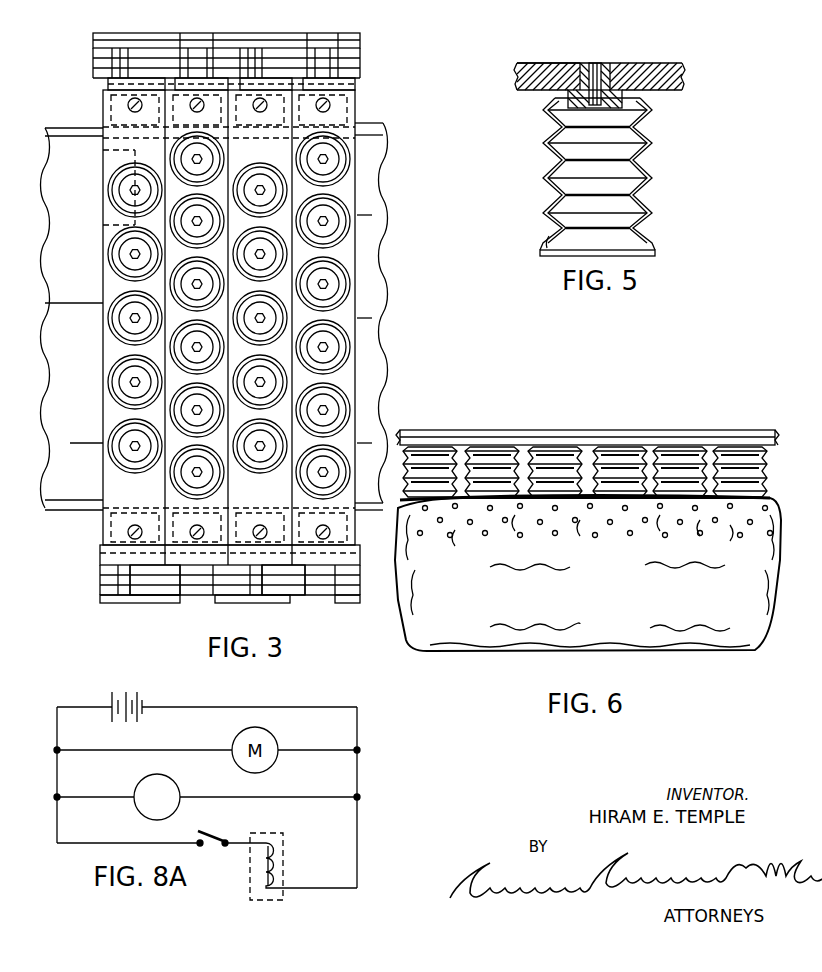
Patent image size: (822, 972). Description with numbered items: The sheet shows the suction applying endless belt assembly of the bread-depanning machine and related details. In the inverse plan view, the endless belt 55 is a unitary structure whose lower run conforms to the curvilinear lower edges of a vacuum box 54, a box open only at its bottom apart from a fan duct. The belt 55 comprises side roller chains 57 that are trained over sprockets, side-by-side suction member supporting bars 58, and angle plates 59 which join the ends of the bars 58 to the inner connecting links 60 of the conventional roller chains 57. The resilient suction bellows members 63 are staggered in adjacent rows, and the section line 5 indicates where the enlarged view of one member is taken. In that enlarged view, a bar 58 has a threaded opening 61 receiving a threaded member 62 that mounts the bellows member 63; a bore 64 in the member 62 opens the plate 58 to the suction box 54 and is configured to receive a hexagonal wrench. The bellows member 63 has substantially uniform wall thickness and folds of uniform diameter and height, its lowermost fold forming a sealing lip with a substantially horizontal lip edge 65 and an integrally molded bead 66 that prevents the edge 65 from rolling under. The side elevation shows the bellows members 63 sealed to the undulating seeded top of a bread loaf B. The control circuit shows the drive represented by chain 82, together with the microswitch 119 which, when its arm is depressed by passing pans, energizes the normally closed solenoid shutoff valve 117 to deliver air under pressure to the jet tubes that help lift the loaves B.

In FIG. 3, the section line 5— 5 is at (98, 150).
In FIG. 3, the vacuum box 54 is at (382, 199).
In FIG. 3, the endless belt 55 is at (366, 284).
In FIG. 3, the side roller chains 57 is at (167, 604).
In FIG. 3, the suction member supporting bars 58 is at (356, 112).
In FIG. 5, the suction member supporting bars 58 is at (638, 63).
In FIG. 6, the suction member supporting bars 58 is at (602, 430).
In FIG. 3, the angle plates 59 is at (104, 547).
In FIG. 3, the inner connecting links 60 is at (100, 566).
In FIG. 5, the threaded openings 61 is at (612, 63).
In FIG. 5, the threaded members 62 is at (568, 63).
In FIG. 3, the suction bellows members 63 is at (108, 421).
In FIG. 5, the suction bellows members 63 is at (654, 138).
In FIG. 5, the bores 64 is at (592, 63).
In FIG. 5, the lip edge 65 is at (539, 253).
In FIG. 5, the bead 66 is at (544, 239).
In FIG. 6, the bread loaves B is at (466, 620).
In FIG. 8A, the chain 82 is at (207, 797).
In FIG. 8A, the shutoff valve 117 is at (283, 894).
In FIG. 8A, the microswitch 119 is at (217, 836).